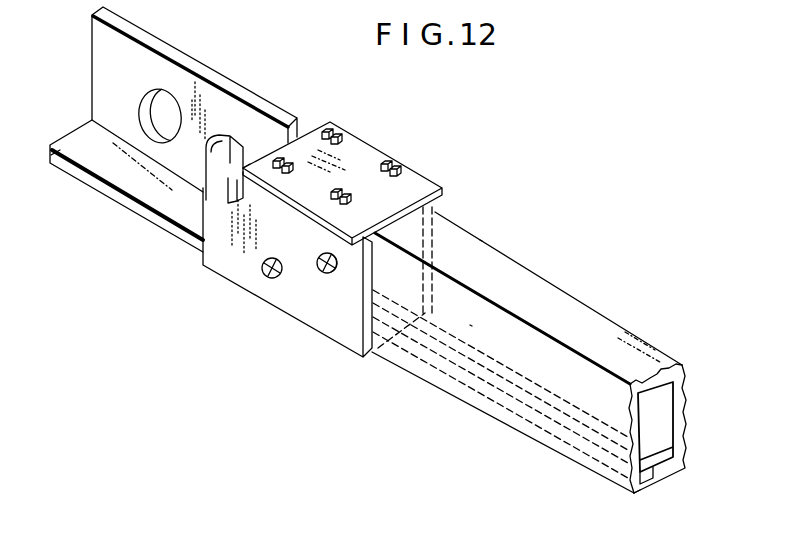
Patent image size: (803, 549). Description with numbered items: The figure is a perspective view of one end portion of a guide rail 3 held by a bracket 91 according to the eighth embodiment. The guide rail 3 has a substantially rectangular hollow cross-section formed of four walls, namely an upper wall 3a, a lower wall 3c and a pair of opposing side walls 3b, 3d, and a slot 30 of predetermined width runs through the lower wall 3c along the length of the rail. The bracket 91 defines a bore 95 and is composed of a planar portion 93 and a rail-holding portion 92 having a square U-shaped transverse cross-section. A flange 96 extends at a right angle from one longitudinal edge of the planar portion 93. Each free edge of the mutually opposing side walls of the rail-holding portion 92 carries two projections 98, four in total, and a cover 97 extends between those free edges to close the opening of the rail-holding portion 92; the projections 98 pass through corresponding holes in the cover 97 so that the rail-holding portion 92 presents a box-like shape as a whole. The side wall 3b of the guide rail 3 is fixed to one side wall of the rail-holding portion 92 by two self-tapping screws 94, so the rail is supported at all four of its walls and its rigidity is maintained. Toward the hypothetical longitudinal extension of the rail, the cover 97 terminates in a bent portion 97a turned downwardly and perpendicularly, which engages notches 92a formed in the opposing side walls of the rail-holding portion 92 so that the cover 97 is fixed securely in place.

The guide rail 3 is at (553, 280).
The upper wall 3a is at (538, 307).
The side wall 3b is at (514, 343).
The lower wall 3c is at (634, 494).
The side wall 3d is at (686, 398).
The slot 30 is at (650, 473).
The bracket 91 is at (135, 233).
The rail-holding portion 92 is at (318, 333).
The notches 92a is at (245, 158).
The planar portion 93 is at (112, 63).
The self-tapping screws 94 is at (323, 253).
The bore 95 is at (160, 97).
The flange 96 is at (77, 148).
The cover 97 is at (418, 185).
The bent portion 97a is at (233, 190).
The projections 98 is at (353, 137).